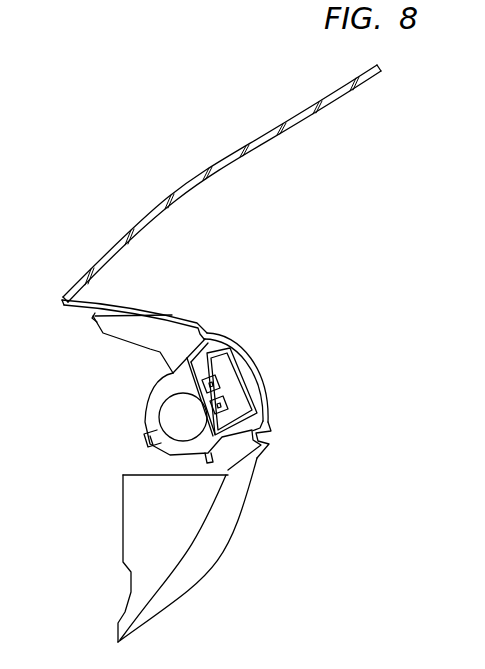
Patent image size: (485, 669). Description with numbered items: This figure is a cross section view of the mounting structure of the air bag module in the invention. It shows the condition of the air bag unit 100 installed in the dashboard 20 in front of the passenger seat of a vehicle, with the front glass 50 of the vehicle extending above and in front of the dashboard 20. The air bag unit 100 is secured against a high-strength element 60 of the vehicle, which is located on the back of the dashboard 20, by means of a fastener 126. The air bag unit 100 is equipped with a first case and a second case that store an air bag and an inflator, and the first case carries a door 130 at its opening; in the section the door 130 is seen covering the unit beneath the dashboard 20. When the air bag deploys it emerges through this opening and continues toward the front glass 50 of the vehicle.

The dashboard 20 is at (176, 318).
The front glass 50 is at (204, 172).
The high-strength element 60 is at (138, 349).
The air bag unit 100 is at (278, 385).
The fastener 126 is at (143, 437).
The door 130 is at (240, 351).